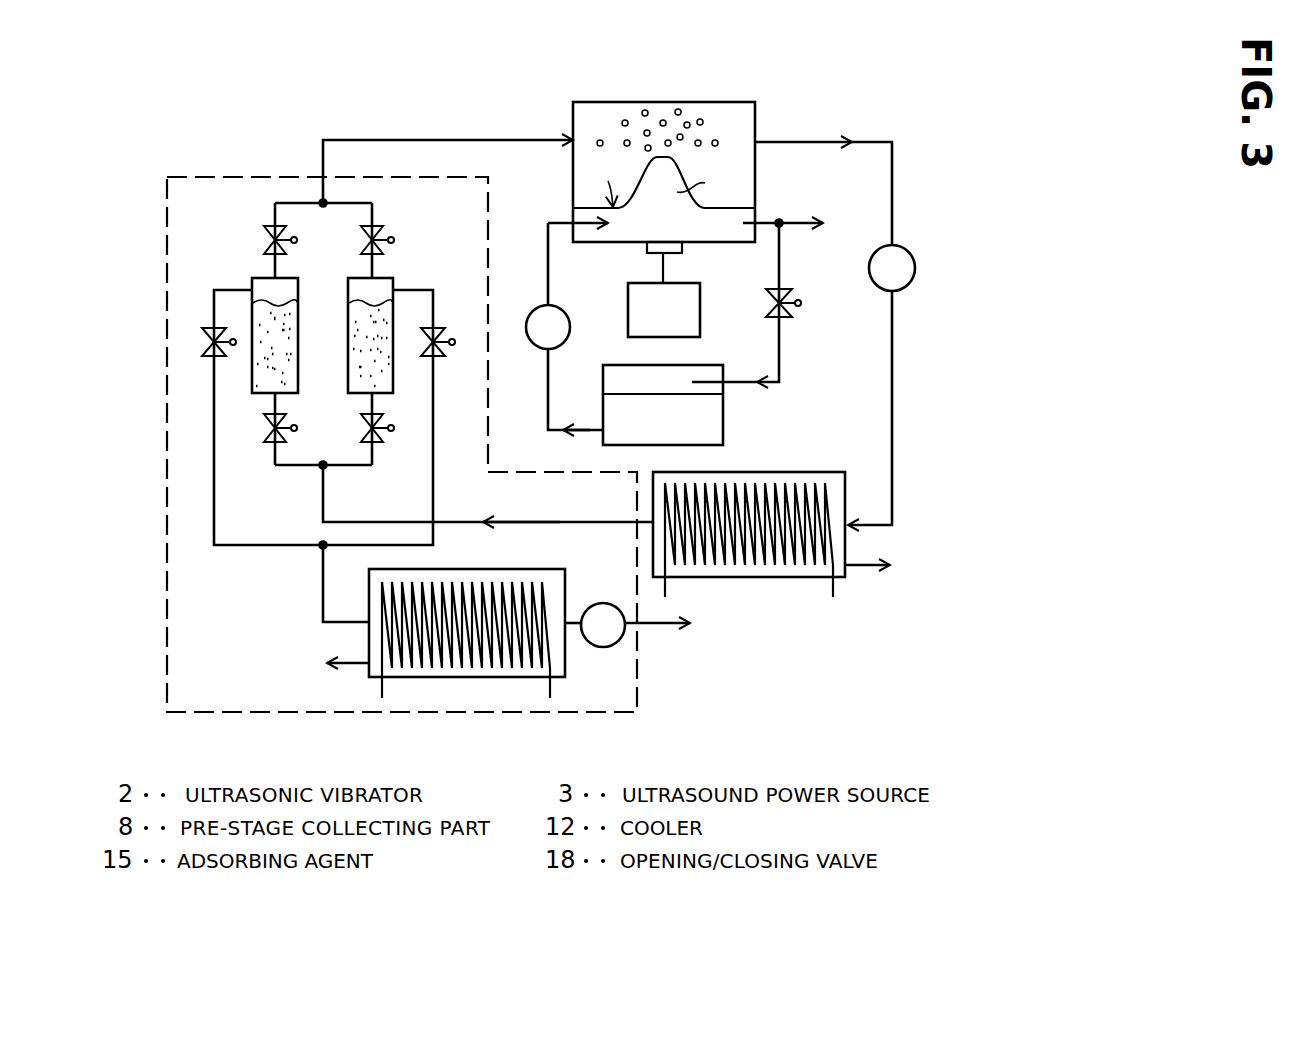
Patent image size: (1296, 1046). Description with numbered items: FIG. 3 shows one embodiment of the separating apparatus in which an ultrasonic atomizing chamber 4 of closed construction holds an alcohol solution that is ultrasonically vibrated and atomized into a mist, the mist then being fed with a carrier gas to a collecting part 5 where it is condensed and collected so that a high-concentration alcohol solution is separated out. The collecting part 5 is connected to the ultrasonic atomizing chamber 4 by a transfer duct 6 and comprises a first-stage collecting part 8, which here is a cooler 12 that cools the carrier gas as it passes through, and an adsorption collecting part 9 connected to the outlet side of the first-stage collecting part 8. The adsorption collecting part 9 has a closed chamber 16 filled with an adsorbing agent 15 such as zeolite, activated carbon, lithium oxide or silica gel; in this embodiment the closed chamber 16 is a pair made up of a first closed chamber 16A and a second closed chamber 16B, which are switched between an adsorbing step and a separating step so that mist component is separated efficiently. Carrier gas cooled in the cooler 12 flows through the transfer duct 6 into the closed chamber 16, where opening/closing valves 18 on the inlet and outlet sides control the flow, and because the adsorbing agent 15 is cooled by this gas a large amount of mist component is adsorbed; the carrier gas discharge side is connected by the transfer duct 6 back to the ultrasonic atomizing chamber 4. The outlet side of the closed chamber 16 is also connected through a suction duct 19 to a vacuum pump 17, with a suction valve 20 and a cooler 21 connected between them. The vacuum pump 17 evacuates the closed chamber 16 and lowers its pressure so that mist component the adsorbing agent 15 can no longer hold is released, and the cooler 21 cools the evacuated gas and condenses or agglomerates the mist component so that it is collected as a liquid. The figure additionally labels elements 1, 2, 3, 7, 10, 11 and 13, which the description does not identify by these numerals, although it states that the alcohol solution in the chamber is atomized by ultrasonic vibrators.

The ultrasonic atomizing device 1 is at (618, 280).
The ultrasonic vibrator 2 is at (647, 247).
The ultrasound power source 3 is at (693, 298).
The ultrasonic atomizing chamber 4 is at (697, 102).
The collecting part 5 is at (805, 632).
The transfer duct 6 is at (440, 140).
The blower 7 is at (915, 272).
The first-stage collecting part 8 is at (768, 600).
The adsorption collecting part 9 is at (640, 686).
The circulation pump 10 is at (563, 350).
The liquid tank 11 is at (723, 422).
The cooler 12 is at (802, 482).
The cooling coil 13 is at (740, 560).
The adsorbing agent 15 is at (262, 330).
The closed chamber 16 is at (397, 90).
The first closed chamber 16A is at (350, 278).
The second closed chamber 16B is at (297, 278).
The vacuum pump 17 is at (597, 648).
The opening/closing valve 18 is at (266, 235).
The suction duct 19 is at (214, 460).
The suction valve 20 is at (202, 342).
The cooler 21 is at (428, 677).